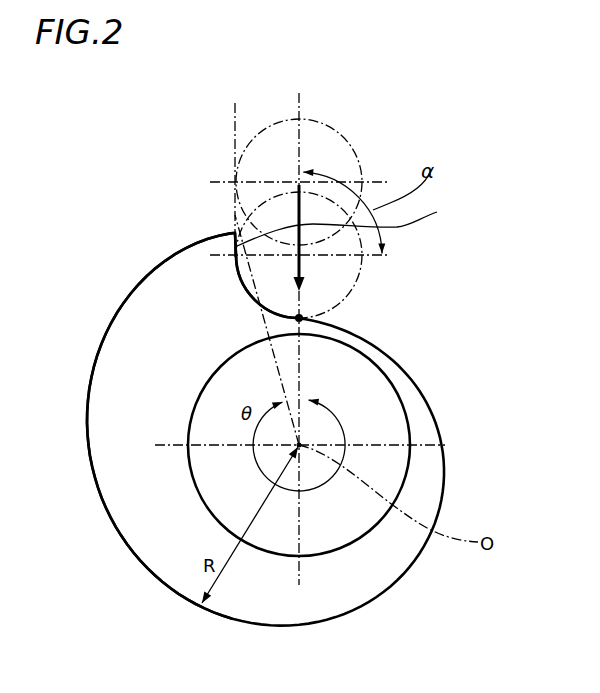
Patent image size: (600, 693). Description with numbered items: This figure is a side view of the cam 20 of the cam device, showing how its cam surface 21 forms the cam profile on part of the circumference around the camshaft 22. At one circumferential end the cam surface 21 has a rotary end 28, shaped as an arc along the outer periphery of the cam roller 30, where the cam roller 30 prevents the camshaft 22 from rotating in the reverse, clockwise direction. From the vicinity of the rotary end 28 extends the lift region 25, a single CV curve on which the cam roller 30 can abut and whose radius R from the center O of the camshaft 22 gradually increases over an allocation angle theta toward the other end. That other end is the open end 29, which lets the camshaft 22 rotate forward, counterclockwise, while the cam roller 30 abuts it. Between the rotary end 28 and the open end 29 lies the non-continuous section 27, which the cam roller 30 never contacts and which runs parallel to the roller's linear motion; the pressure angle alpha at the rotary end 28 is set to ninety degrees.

The cam 20 is at (444, 416).
The cam surface 21 is at (113, 528).
The camshaft 22 is at (364, 508).
The lift region 25 is at (100, 357).
The non-continuous section 27 is at (350, 226).
The rotary end 28 is at (266, 307).
The open end 29 is at (236, 234).
The cam roller 30 is at (337, 128).